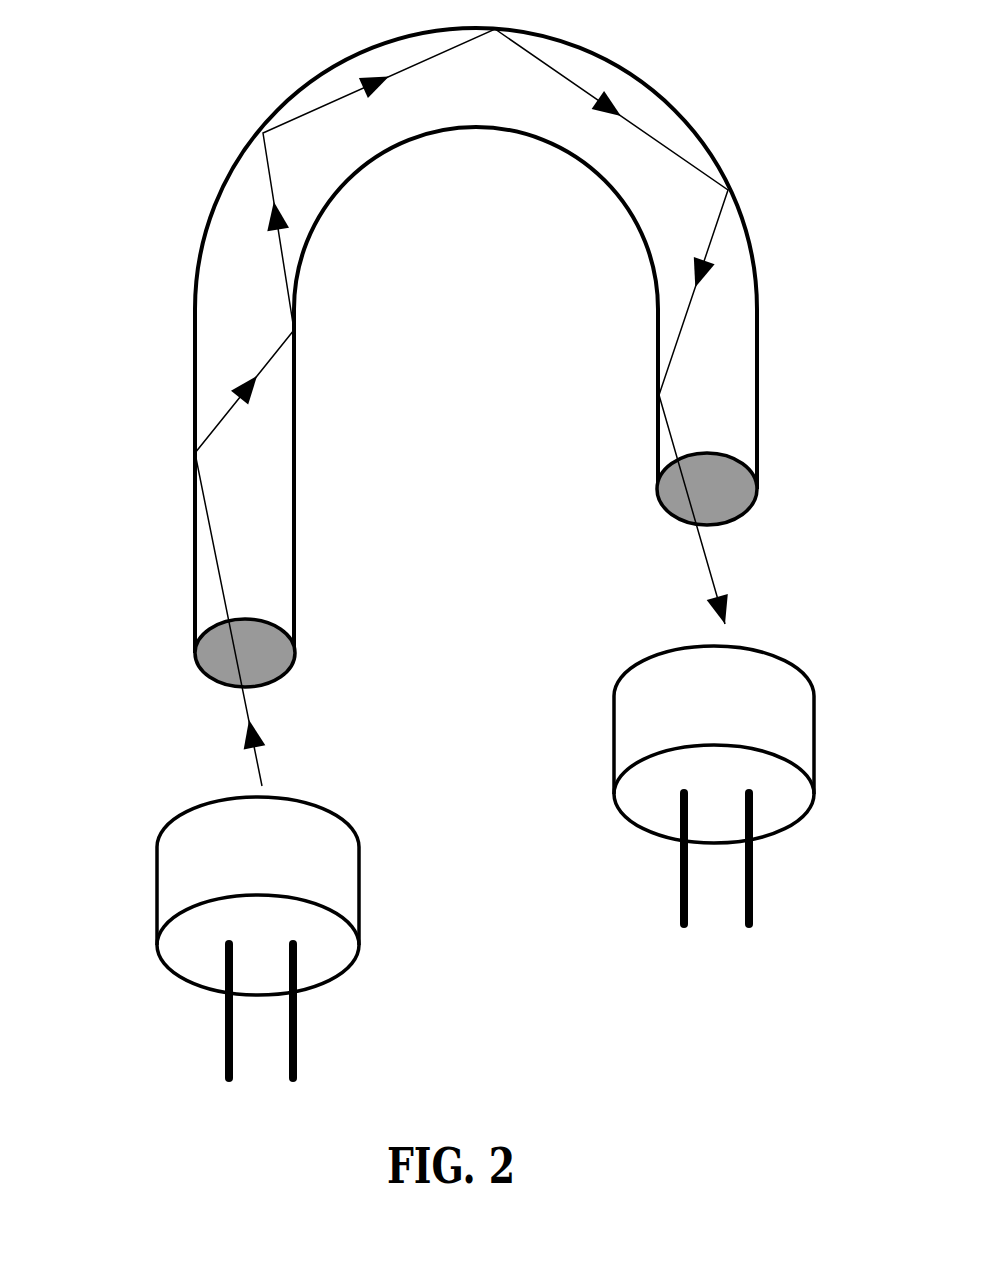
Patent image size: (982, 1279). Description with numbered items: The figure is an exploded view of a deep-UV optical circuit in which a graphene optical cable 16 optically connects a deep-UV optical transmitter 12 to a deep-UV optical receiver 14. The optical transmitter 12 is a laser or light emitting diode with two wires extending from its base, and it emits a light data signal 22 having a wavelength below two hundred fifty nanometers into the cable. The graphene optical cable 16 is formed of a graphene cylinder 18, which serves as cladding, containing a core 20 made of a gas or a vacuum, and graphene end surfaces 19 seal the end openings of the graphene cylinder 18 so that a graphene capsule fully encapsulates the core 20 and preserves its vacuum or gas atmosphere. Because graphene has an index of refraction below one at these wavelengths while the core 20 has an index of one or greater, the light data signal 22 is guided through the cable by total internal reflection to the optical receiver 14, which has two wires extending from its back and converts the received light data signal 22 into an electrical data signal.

The deep-UV optical transmitter 12 is at (248, 858).
The deep-UV optical receiver 14 is at (707, 709).
The graphene optical cable 16 is at (395, 340).
The graphene cylinder 18 is at (200, 188).
The graphene end surfaces 19 is at (266, 653).
The core 20 is at (271, 576).
The light data signal 22 is at (280, 750).